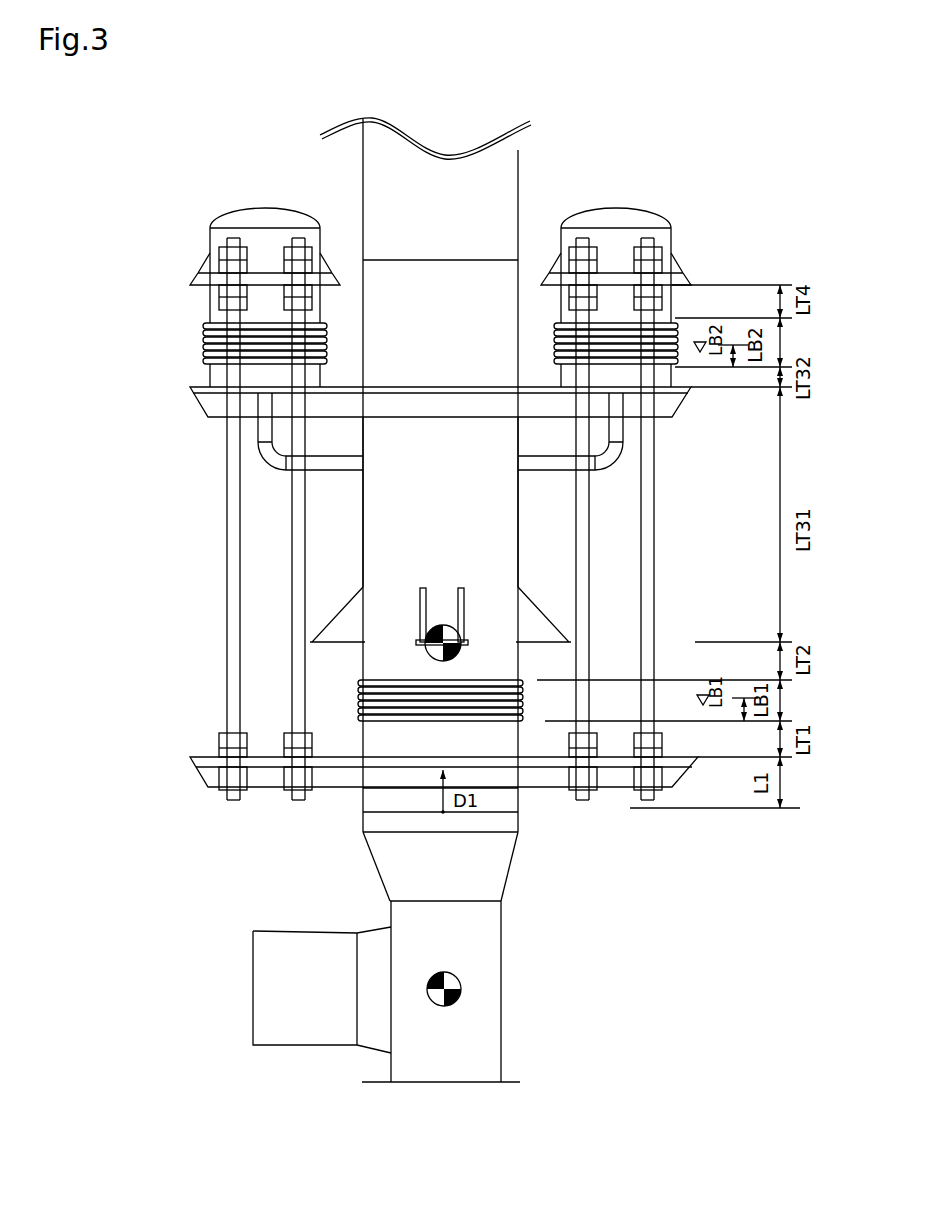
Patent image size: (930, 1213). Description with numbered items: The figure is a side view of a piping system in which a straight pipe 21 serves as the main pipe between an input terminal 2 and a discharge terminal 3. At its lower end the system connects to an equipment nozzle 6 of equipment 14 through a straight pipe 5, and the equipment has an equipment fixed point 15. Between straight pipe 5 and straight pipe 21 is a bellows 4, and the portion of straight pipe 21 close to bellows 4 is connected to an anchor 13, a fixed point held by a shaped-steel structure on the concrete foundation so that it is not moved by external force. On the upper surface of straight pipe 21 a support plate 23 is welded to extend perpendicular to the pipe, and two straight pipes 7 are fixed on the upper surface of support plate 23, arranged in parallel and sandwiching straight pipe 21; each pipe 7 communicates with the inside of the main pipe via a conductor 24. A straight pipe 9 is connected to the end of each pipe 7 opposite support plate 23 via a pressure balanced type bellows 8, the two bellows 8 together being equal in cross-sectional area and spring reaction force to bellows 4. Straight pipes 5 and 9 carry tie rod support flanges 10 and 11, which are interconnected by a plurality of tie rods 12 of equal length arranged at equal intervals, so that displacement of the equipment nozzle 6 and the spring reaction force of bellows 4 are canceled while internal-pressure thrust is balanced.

The input terminal 2 is at (358, 680).
The discharge terminal 3 is at (481, 263).
The bellows 4 is at (358, 700).
The straight pipe 5 is at (390, 800).
The equipment nozzle 6 is at (500, 857).
The straight pipe 7 is at (210, 380).
The pressure balanced type bellows 8 is at (207, 345).
The straight pipe 9 is at (215, 308).
The tie rod support flange 10 is at (195, 762).
The tie rod support flange 11 is at (195, 277).
The tie rod 12 is at (297, 512).
The anchor 13 is at (433, 630).
The equipment 14 is at (487, 1062).
The equipment fixed point 15 is at (462, 985).
The straight pipe 21 is at (398, 543).
The support plate 23 is at (190, 390).
The conductor 24 is at (262, 455).